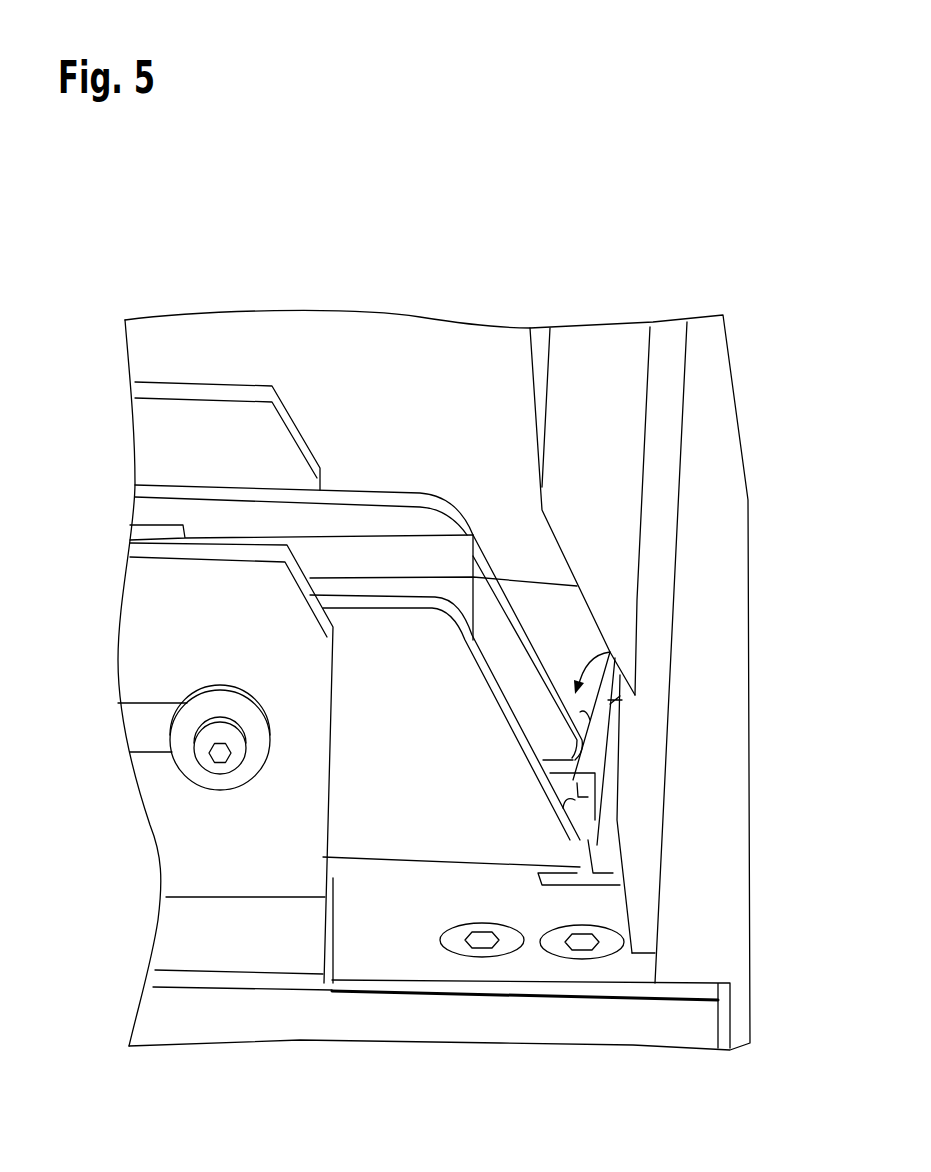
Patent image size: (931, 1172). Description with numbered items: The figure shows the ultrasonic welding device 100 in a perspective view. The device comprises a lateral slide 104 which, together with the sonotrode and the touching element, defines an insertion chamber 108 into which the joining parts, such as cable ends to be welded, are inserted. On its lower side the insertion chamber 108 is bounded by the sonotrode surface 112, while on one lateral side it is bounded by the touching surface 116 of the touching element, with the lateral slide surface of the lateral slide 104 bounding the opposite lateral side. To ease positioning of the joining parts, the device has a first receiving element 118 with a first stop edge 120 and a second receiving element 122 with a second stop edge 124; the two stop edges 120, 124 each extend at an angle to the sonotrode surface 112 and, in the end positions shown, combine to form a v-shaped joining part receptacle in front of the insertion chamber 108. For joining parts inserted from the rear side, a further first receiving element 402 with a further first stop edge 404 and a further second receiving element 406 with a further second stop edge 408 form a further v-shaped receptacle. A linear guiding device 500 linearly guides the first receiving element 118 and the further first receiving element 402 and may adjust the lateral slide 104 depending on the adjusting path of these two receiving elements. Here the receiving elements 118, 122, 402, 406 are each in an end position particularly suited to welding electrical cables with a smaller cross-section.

The ultrasonic welding device 100 is at (136, 238).
The lateral slide 104 is at (407, 557).
The insertion chamber 108 is at (610, 652).
The sonotrode surface 112 is at (593, 787).
The touching surface 116 is at (623, 700).
The first receiving element 118 is at (495, 818).
The first stop edge 120 is at (585, 790).
The second receiving element 122 is at (600, 873).
The second stop edge 124 is at (588, 823).
The further first receiving element 402 is at (497, 630).
The further first stop edge 404 is at (533, 650).
The further second receiving element 406 is at (592, 759).
The further second stop edge 408 is at (593, 714).
The linear guiding device 500 is at (175, 640).